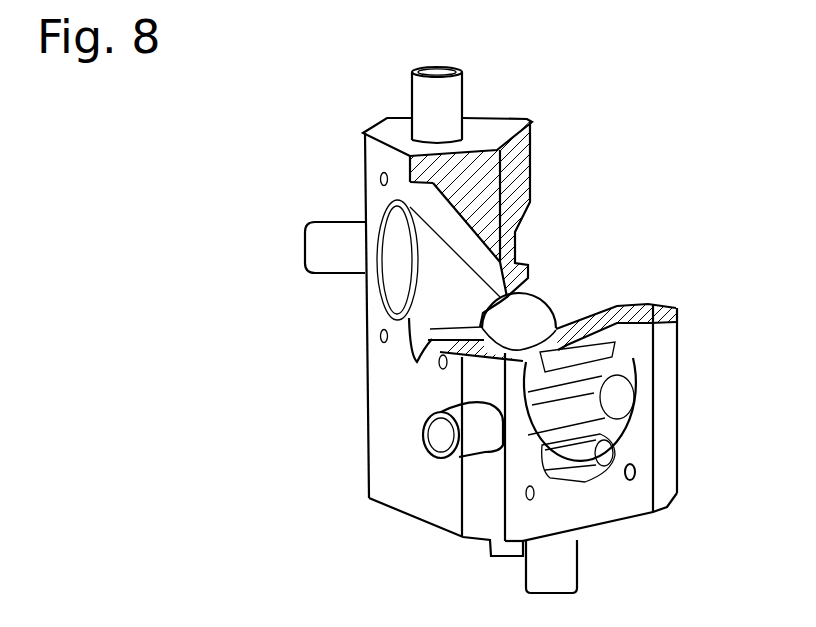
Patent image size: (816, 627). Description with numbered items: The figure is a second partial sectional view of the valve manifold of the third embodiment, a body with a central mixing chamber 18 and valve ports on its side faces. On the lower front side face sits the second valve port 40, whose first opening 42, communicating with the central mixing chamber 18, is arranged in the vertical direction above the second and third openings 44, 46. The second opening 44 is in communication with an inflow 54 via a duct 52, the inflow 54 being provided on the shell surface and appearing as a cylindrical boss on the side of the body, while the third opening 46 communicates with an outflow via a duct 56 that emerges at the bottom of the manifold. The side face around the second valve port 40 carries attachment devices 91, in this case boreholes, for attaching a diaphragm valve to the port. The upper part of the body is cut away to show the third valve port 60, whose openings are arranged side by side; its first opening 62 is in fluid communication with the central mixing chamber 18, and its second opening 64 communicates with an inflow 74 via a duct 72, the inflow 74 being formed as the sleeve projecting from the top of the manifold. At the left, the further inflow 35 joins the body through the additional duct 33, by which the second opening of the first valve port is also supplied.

The central mixing chamber 18 is at (528, 330).
The additional duct 33 is at (332, 238).
The further inflow 35 is at (302, 248).
The second valve port 40 is at (609, 494).
The first opening 42 is at (587, 346).
The second opening 44 is at (578, 405).
The third opening 46 is at (595, 462).
The duct 52 is at (478, 445).
The inflow 54 is at (437, 432).
The duct 56 is at (563, 575).
The third valve port 60 is at (363, 298).
The first opening 62 is at (425, 300).
The second opening 64 is at (393, 230).
The duct 72 is at (424, 92).
The inflow 74 is at (438, 68).
The attachment devices 91 is at (637, 473).